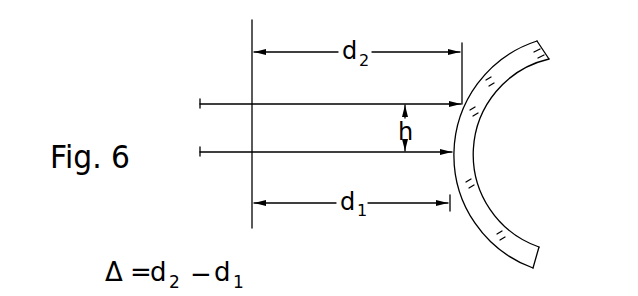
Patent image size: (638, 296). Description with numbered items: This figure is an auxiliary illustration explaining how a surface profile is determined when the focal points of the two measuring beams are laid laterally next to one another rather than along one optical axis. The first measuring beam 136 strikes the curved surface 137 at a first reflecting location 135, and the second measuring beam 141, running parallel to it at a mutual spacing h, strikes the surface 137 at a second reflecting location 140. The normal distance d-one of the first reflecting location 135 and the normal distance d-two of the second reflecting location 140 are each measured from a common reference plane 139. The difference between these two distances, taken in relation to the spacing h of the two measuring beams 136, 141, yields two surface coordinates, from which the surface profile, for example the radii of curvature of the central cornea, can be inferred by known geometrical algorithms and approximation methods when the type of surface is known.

The first reflecting location 135 is at (462, 151).
The first measuring beam 136 is at (292, 152).
The surface 137 is at (471, 222).
The reference plane 139 is at (250, 165).
The second reflecting location 140 is at (484, 115).
The second measuring beam 141 is at (322, 102).